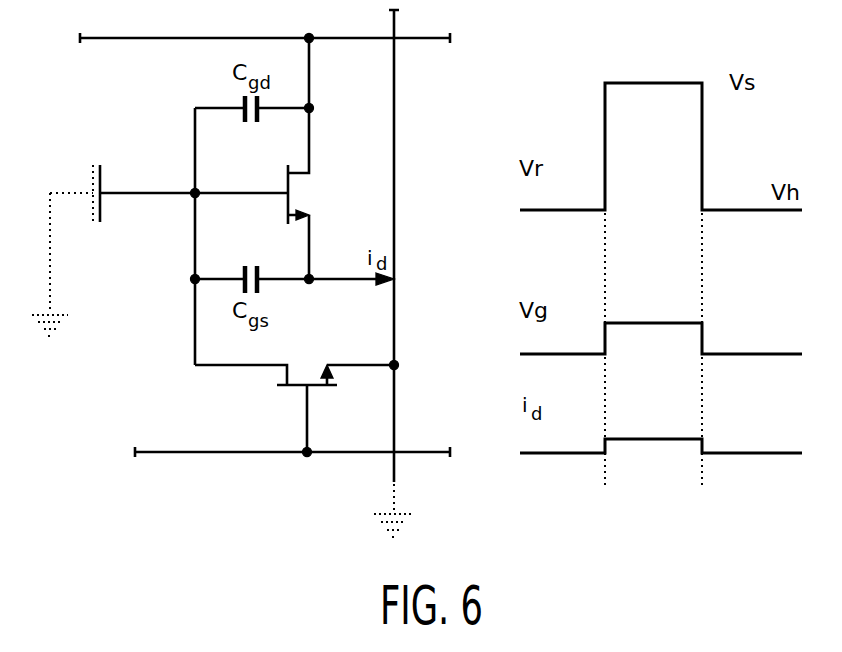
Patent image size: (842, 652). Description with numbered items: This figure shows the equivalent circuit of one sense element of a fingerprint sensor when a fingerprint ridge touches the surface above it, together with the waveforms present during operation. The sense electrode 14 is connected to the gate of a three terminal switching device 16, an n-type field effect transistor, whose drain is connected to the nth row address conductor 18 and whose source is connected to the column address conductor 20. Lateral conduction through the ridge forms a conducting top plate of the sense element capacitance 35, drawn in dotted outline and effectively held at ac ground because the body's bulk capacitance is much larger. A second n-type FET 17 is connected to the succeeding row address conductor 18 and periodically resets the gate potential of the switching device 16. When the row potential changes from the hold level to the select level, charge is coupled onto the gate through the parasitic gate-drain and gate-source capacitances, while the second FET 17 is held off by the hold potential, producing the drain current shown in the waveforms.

The sense electrode 14 is at (102, 215).
The three terminal switching device 16 is at (287, 181).
The second n-type FET 17 is at (327, 390).
The row address conductor 18 is at (425, 40).
The column address conductor 20 is at (396, 176).
The sense element capacitance 35 is at (80, 165).